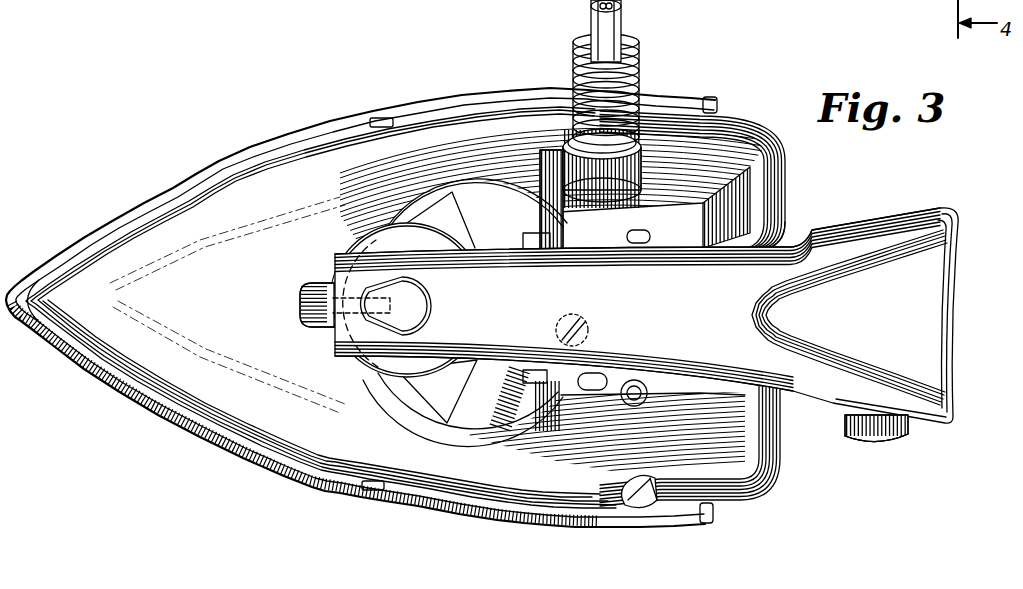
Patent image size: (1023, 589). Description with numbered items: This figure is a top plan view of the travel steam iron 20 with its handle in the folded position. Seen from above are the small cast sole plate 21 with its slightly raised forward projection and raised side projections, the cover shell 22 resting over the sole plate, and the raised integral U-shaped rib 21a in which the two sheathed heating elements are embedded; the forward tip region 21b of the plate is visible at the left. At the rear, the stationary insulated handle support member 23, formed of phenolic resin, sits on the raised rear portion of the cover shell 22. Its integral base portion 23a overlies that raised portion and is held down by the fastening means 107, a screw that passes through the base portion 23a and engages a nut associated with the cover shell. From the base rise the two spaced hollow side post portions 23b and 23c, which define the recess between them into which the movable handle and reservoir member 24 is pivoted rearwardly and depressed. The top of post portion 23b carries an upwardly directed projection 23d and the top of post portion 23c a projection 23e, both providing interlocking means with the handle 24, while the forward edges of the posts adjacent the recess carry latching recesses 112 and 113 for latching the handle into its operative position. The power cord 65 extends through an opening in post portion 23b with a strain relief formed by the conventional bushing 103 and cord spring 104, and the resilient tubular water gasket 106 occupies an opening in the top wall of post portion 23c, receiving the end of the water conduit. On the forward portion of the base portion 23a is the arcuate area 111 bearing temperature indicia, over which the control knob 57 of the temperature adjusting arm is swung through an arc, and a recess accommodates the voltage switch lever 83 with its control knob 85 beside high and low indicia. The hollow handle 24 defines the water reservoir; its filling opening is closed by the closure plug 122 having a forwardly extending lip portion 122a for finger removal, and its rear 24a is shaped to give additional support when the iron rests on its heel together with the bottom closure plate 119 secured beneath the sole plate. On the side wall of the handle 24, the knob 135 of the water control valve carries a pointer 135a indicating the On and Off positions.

The travel steam iron 20 is at (412, 545).
The sole plate 21 is at (240, 134).
The raised integral U-shaped rib 21a is at (387, 119).
The cover plate tip 21b is at (48, 280).
The cover shell 22 is at (180, 227).
The handle support member 23 is at (720, 160).
The base portion 23a is at (457, 190).
The side post portion 23b is at (700, 222).
The side post portion 23c is at (697, 403).
The upwardly directed projection 23d is at (645, 230).
The projection 23e is at (592, 373).
The movable handle and reservoir member 24 is at (697, 314).
The rear of the handle 24a is at (958, 253).
The control knob 57 is at (320, 280).
The power cord 65 is at (592, 5).
The voltage switch lever 83 is at (657, 473).
The control knob 85 is at (617, 493).
The bushing 103 is at (570, 150).
The cord spring 104 is at (641, 72).
The water gasket 106 is at (645, 381).
The fastening means 107 is at (565, 314).
The arcuate area 111 is at (430, 210).
The latching recess 112 is at (537, 240).
The latching recess 113 is at (533, 380).
The bottom closure plate 119 is at (630, 9).
The closure plug 122 is at (437, 303).
The lip portion 122a is at (351, 342).
The knob 135 is at (853, 441).
The pointer 135a is at (907, 438).